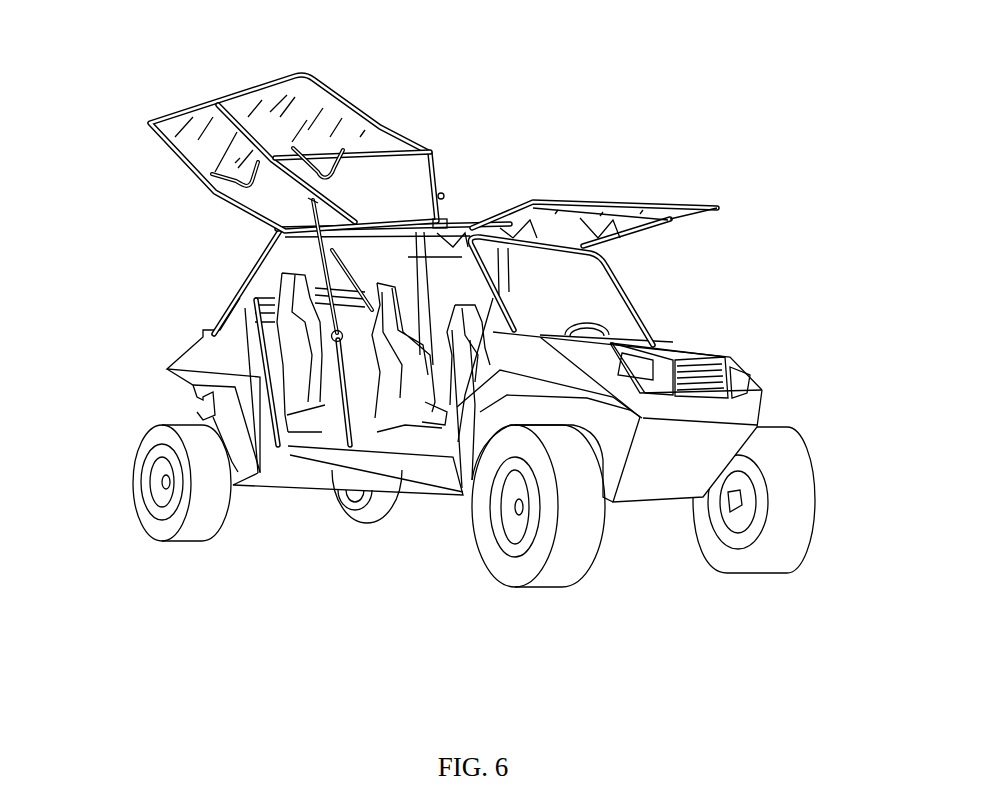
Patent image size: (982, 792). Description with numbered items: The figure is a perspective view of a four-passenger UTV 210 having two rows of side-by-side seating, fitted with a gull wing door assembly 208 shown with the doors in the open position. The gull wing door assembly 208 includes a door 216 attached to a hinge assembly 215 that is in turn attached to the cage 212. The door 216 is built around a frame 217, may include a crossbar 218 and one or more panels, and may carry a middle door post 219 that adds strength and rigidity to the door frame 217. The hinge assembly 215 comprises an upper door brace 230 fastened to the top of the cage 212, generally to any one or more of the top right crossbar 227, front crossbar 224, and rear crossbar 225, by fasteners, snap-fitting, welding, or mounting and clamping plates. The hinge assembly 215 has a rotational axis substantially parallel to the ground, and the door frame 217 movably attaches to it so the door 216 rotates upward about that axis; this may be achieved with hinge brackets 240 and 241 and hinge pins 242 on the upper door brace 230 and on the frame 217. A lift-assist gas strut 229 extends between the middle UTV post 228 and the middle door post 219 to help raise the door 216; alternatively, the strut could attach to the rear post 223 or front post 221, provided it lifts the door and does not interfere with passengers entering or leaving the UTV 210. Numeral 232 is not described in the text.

The gull wing door assembly 208 is at (394, 284).
The UTV 210 is at (743, 355).
The cage 212 is at (459, 417).
The hinge assembly 215 is at (390, 245).
The door 216 is at (262, 144).
The frame 217 is at (168, 138).
The crossbar 218 is at (217, 195).
The middle door post 219 is at (352, 173).
The front post 221 is at (512, 262).
The rear post 223 is at (240, 294).
The front crossbar 224 is at (548, 252).
The rear crossbar 225 is at (392, 250).
The top right crossbar 227 is at (300, 207).
The middle UTV post 228 is at (330, 385).
The gas strut 229 is at (300, 260).
The upper door brace 230 is at (478, 212).
The window 232 is at (311, 141).
The hinge bracket 240 is at (402, 228).
The hinge bracket 241 is at (441, 192).
The hinge pins 242 is at (405, 245).